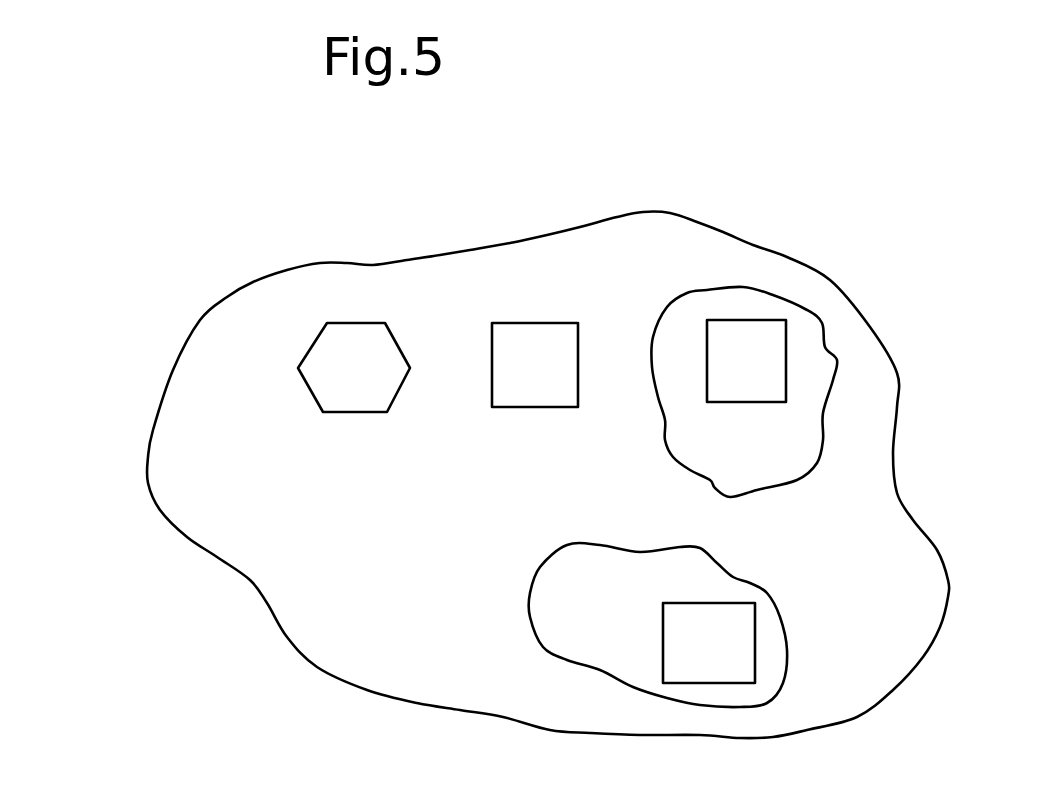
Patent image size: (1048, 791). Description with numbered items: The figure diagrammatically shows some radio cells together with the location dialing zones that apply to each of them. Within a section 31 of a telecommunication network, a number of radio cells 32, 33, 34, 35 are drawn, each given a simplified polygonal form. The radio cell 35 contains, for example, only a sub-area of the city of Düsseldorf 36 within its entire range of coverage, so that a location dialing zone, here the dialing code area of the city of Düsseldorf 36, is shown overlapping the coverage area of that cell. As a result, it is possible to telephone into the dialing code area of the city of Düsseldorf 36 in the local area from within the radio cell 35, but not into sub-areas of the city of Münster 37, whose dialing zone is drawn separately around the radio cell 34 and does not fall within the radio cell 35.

The section of a telecommunication network 31 is at (948, 594).
The radio cell 32 is at (349, 322).
The radio cell 33 is at (513, 323).
The radio cell 34 is at (711, 320).
The radio cell 35 is at (753, 668).
The city of Düsseldorf 36 is at (717, 565).
The city of Münster 37 is at (837, 360).